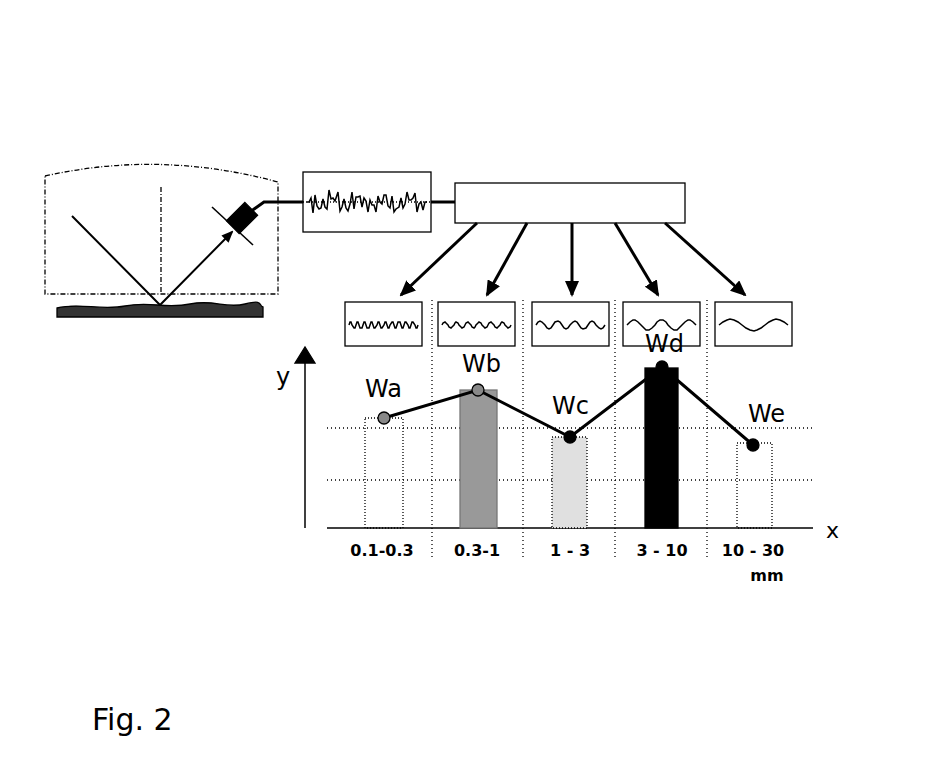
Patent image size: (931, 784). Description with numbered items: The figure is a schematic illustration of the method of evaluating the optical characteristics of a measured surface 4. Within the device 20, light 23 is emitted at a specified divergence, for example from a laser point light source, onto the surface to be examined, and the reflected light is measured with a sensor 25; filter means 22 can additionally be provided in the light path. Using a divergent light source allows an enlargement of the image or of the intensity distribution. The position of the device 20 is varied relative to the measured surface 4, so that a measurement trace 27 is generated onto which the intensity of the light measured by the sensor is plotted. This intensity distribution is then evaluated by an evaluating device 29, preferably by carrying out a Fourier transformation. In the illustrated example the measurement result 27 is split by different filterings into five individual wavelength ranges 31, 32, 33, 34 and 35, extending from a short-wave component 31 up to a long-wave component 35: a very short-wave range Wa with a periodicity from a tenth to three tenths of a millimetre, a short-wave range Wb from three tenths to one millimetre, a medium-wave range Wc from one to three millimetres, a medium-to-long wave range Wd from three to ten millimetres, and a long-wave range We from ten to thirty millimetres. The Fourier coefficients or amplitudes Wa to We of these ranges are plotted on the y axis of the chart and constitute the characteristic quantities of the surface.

The device 20 is at (172, 146).
The filter means 22 is at (233, 212).
The light 23 is at (100, 238).
The sensor 25 is at (251, 217).
The measurement trace 27 is at (387, 197).
The evaluating device 29 is at (555, 198).
The wavelength range 31 is at (383, 310).
The wavelength range 32 is at (476, 310).
The wavelength range 33 is at (570, 308).
The wavelength range 34 is at (661, 310).
The wavelength range 35 is at (753, 308).
The measured surface 4 is at (130, 317).